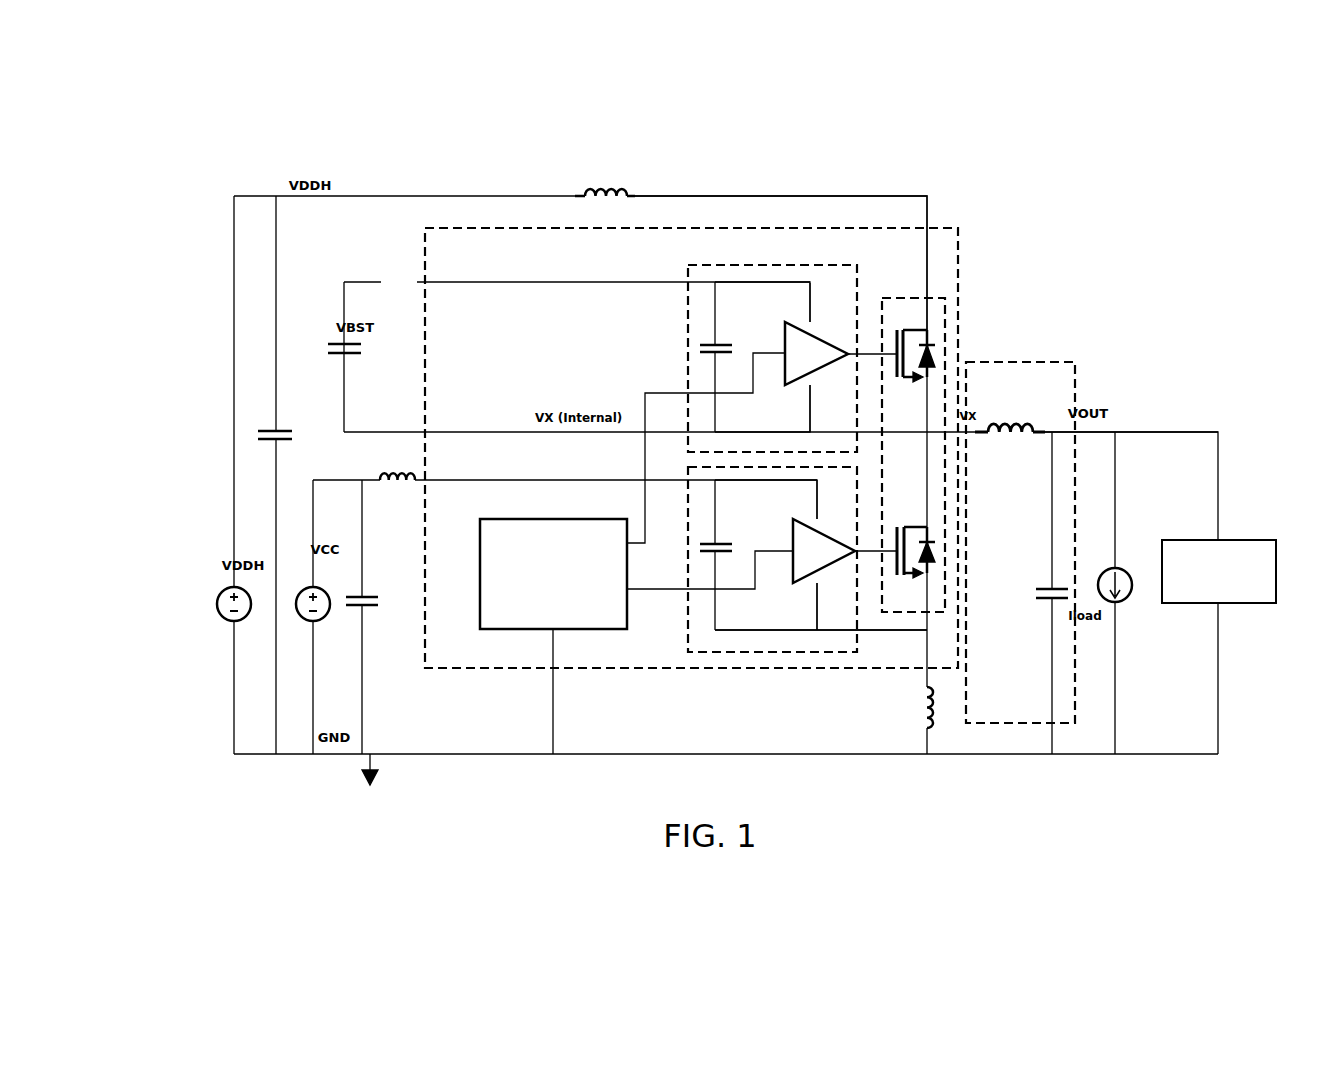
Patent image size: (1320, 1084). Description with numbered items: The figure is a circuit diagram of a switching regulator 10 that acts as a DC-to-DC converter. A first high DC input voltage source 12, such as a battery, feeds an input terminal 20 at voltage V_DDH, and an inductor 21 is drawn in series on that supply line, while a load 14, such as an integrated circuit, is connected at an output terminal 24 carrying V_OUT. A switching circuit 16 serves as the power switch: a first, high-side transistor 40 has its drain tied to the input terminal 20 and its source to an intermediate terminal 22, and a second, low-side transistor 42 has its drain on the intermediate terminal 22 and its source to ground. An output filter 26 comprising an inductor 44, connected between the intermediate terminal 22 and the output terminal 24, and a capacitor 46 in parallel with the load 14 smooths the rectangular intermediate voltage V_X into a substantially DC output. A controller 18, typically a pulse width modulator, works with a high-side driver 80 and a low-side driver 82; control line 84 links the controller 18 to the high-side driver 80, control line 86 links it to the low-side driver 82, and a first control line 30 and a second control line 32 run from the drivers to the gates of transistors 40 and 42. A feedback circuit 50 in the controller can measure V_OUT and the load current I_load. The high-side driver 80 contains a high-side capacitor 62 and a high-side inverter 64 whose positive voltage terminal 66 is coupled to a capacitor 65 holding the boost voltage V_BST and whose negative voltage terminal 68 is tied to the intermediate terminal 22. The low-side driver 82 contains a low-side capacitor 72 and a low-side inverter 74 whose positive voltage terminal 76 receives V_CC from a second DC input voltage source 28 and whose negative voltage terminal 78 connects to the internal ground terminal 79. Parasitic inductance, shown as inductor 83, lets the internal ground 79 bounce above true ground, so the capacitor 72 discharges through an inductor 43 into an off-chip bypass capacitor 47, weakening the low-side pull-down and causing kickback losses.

The switching regulator 10 is at (962, 248).
The first high direct current input voltage source 12 is at (218, 609).
The load 14 is at (1121, 597).
The switching circuit 16 is at (937, 343).
The controller 18 is at (553, 574).
The input terminal 20 is at (786, 251).
The input inductor 21 is at (605, 175).
The intermediate terminal 22 is at (923, 433).
The output terminal 24 is at (1112, 430).
The output filter 26 is at (1040, 360).
The second DC input voltage source 28 is at (298, 610).
The first control line 30 is at (868, 348).
The second control line 32 is at (875, 555).
The first transistor 40 is at (911, 369).
The second transistor 42 is at (913, 565).
The inductor 43 is at (397, 495).
The inductor 44 is at (1010, 455).
The capacitor 46 is at (1039, 608).
The off-chip bypass capacitor 47 is at (365, 617).
The feedback circuit 50 is at (1219, 571).
The high-side capacitor 62 is at (733, 343).
The high-side inverter 64 is at (816, 353).
The capacitor 65 is at (346, 363).
The positive voltage terminal 66 is at (776, 306).
The negative voltage terminal 68 is at (776, 408).
The low-side capacitor 72 is at (730, 542).
The low-side inverter 74 is at (824, 551).
The positive voltage terminal 76 is at (779, 502).
The negative voltage terminal 78 is at (830, 606).
The internal ground terminal 79 is at (821, 643).
The high-side driver 80 is at (687, 298).
The low-side driver 82 is at (698, 645).
The inductor 83 is at (910, 707).
The control line 84 is at (643, 398).
The control line 86 is at (660, 592).